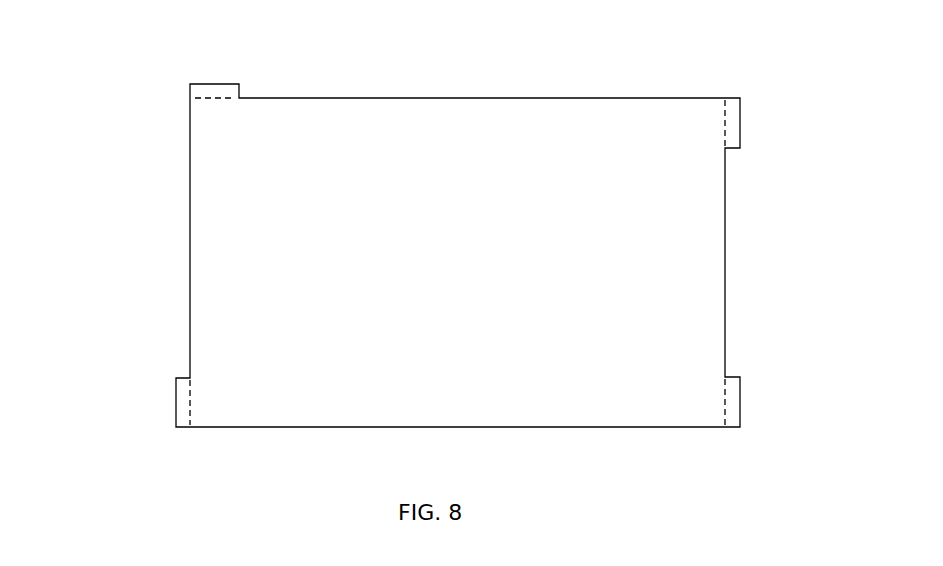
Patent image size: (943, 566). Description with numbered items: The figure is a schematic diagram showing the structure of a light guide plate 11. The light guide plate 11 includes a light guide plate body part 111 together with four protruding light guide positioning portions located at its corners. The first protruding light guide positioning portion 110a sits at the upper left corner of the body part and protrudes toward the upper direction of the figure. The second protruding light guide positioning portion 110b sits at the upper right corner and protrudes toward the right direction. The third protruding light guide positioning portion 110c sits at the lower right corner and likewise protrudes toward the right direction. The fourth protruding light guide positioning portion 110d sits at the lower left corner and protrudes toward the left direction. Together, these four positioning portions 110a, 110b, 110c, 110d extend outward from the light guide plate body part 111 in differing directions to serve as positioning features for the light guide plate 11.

The light guide plate 11 is at (437, 233).
The light guide plate body part 111 is at (323, 126).
The first protruding light guide positioning portion 110a is at (218, 98).
The second protruding light guide positioning portion 110b is at (733, 128).
The third protruding light guide positioning portion 110c is at (733, 409).
The fourth protruding light guide positioning portion 110d is at (181, 400).